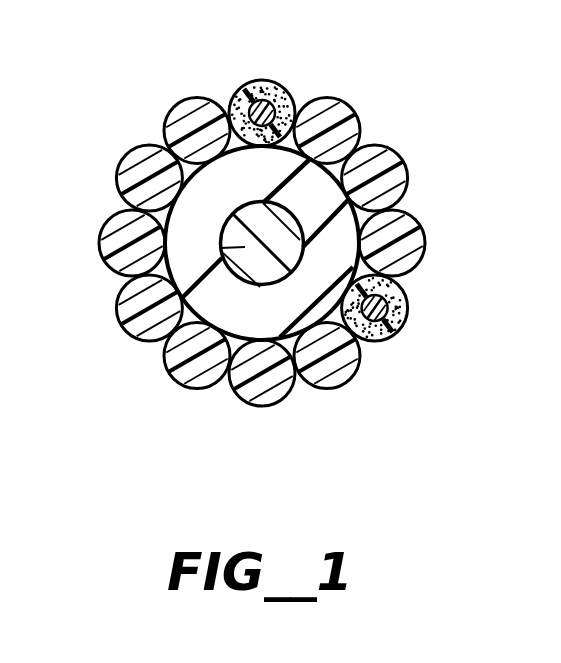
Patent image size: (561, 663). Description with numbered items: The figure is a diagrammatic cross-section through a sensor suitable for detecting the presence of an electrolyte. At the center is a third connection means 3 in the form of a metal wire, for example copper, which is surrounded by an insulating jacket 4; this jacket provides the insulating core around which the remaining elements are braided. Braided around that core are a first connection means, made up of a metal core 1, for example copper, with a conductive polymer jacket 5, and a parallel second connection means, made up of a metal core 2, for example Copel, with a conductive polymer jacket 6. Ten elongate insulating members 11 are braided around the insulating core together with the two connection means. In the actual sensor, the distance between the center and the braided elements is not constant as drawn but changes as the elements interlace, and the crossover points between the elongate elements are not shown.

The core 1 is at (257, 85).
The core 2 is at (403, 313).
The third connection means 3 is at (217, 283).
The insulating jacket 4 is at (148, 343).
The conductive polymer jacket 5 is at (289, 92).
The conductive polymer jacket 6 is at (373, 348).
The elongate insulating members 11 is at (188, 122).